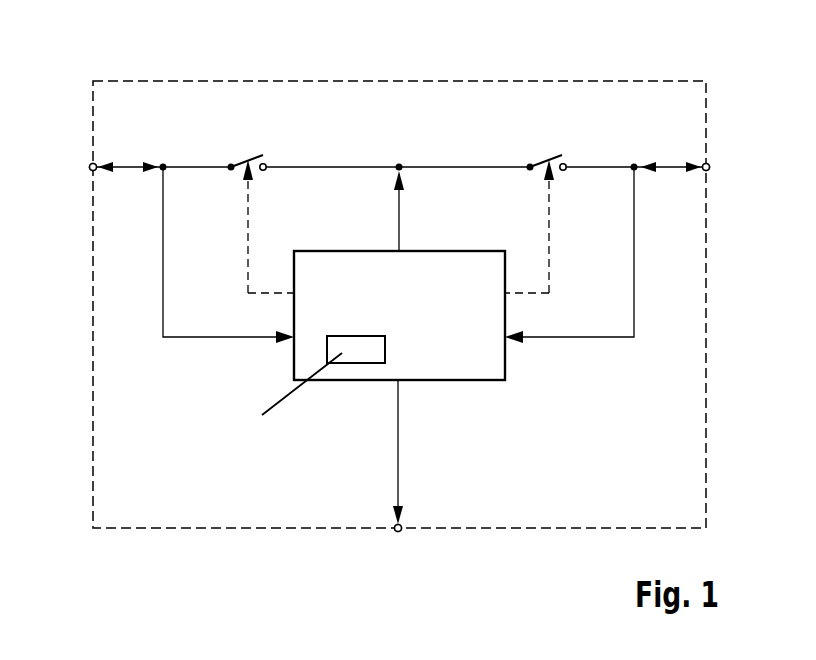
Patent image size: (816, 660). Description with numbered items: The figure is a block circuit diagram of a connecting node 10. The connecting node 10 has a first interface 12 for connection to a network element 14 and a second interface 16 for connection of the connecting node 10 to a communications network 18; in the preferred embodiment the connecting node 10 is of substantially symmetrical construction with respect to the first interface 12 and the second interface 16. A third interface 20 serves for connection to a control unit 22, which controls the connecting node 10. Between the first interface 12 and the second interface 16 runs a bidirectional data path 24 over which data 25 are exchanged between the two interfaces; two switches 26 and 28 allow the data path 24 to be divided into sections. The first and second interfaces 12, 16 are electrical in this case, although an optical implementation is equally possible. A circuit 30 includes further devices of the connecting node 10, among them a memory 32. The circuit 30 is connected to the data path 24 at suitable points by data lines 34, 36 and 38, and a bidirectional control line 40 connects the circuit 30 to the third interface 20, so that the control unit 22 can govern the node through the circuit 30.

The connecting node 10 is at (592, 81).
The first interface 12 is at (90, 165).
The network element 14 is at (80, 178).
The second interface 16 is at (710, 165).
The communications network 18 is at (719, 178).
The third interface 20 is at (398, 533).
The control unit 22 is at (412, 544).
The bidirectional data path 24 is at (196, 167).
The data 25 is at (399, 150).
The switch 26 is at (257, 152).
The switch 28 is at (556, 152).
The circuit 30 is at (465, 363).
The memory 32 is at (350, 356).
The data line 34 is at (225, 338).
The data line 36 is at (572, 338).
The data line 38 is at (399, 217).
The bidirectional control line 40 is at (398, 453).